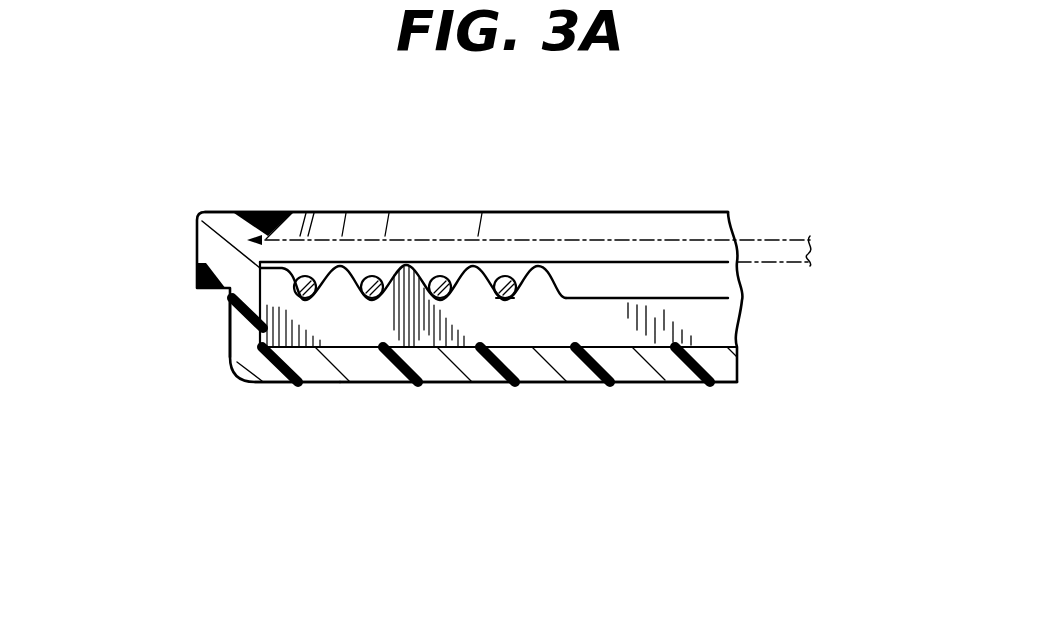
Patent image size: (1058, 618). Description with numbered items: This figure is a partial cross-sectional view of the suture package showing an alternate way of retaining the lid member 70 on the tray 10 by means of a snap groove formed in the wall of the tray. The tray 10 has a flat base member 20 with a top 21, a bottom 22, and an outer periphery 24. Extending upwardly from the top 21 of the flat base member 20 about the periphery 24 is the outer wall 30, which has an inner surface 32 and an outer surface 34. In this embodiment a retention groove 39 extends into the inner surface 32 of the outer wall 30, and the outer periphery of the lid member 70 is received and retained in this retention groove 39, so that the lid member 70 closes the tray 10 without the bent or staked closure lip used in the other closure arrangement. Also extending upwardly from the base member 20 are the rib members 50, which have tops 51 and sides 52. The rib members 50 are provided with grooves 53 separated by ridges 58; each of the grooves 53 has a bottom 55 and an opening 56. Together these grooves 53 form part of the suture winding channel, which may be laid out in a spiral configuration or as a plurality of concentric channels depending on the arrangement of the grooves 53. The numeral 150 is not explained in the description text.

The tray 10 is at (207, 498).
The flat base member 20 is at (677, 360).
The top 21 is at (577, 330).
The bottom 22 is at (597, 382).
The outer periphery 24 is at (270, 383).
The outer wall 30 is at (237, 320).
The inner surface 32 is at (262, 313).
The outer surface 34 is at (228, 342).
The retention groove 39 is at (228, 216).
The rib members 50 is at (654, 263).
The tops 51 is at (588, 262).
The sides 52 is at (717, 317).
The grooves 53 is at (433, 273).
The bottoms 55 is at (372, 300).
The openings 56 is at (518, 270).
The ridges 58 is at (410, 265).
The lid member 70 is at (770, 238).
The contact bump 150 is at (502, 300).